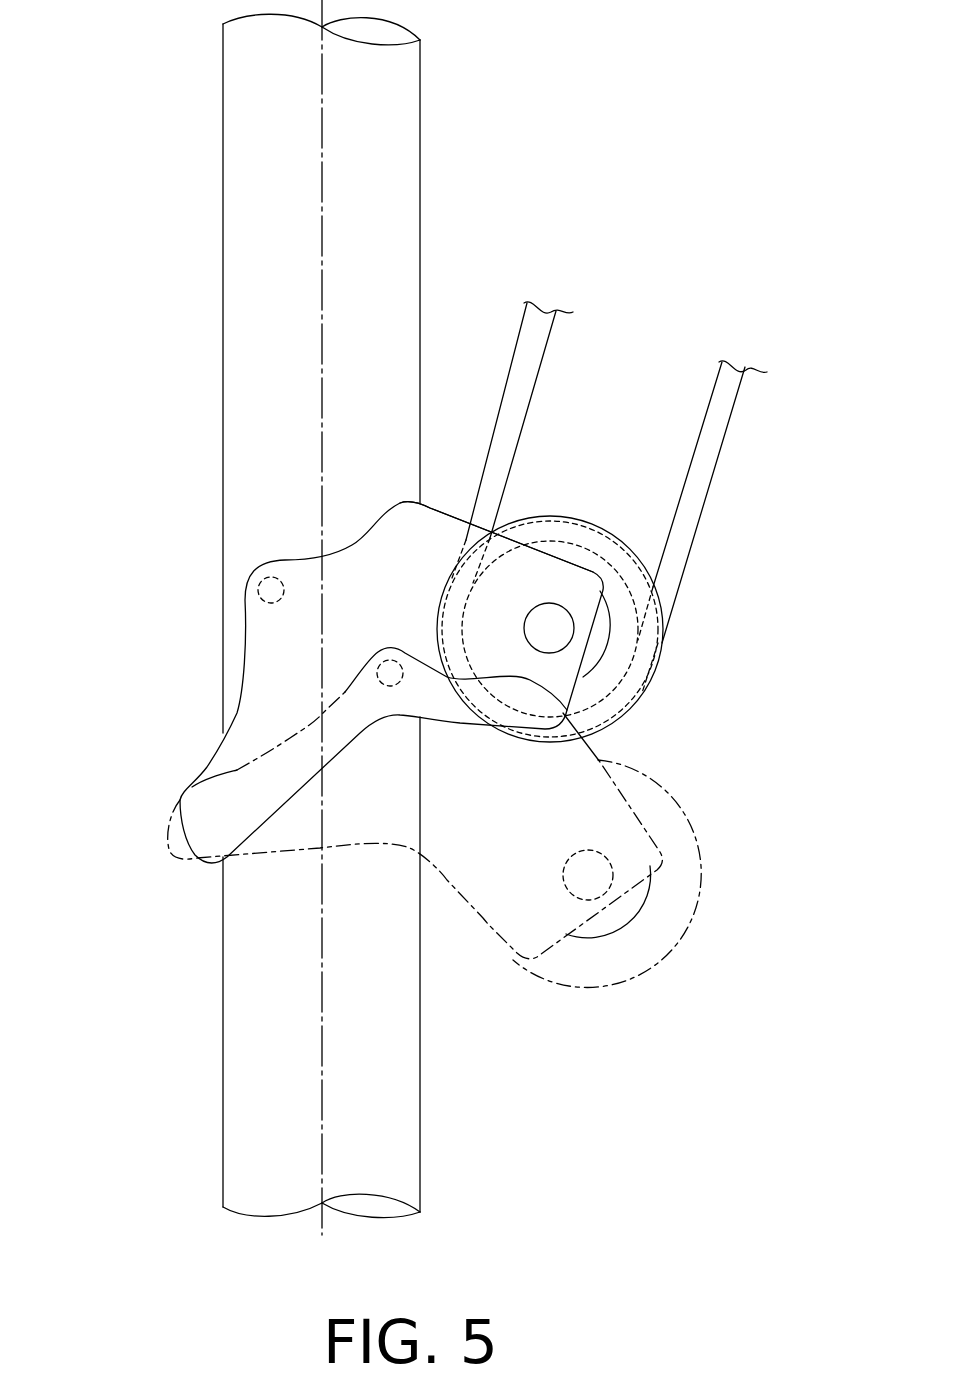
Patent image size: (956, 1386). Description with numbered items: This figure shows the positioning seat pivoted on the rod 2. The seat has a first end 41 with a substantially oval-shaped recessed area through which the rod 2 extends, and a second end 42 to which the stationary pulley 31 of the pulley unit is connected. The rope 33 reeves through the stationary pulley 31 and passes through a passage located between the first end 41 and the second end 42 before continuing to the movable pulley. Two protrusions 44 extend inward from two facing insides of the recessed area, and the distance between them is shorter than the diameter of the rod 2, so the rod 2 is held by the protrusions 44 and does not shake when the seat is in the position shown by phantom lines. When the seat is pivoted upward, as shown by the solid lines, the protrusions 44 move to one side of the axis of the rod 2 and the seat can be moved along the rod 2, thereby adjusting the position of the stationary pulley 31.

The rod 2 is at (373, 215).
The stationary pulley 31 is at (640, 697).
The rope 33 is at (698, 482).
The first end 41 is at (347, 557).
The second end 42 is at (436, 542).
The protrusions 44 is at (260, 593).